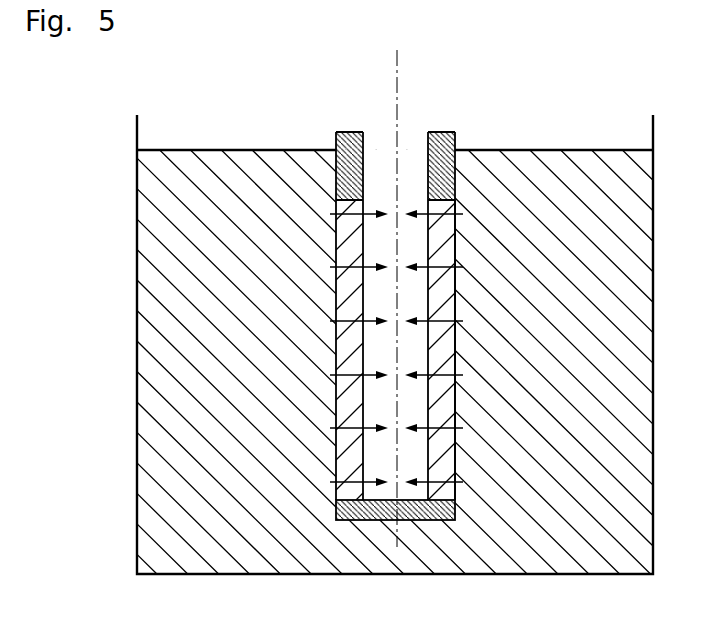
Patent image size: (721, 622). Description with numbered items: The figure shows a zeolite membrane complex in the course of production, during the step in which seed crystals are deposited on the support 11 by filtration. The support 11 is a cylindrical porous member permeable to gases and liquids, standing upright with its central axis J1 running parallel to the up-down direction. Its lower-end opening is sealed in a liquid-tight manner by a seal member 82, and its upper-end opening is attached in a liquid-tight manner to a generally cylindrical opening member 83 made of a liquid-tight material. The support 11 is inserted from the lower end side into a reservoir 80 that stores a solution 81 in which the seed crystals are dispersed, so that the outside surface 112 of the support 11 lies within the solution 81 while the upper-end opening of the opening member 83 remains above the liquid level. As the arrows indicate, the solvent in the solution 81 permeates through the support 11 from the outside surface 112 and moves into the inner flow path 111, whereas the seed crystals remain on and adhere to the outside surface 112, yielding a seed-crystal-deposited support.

The reservoir 80 is at (136, 131).
The solution 81 is at (158, 275).
The central axis J1 is at (397, 72).
The support 11 is at (345, 237).
The opening member 83 is at (350, 150).
The seal member 82 is at (363, 512).
The inner flow path 111 is at (407, 195).
The outside surface 112 is at (470, 247).